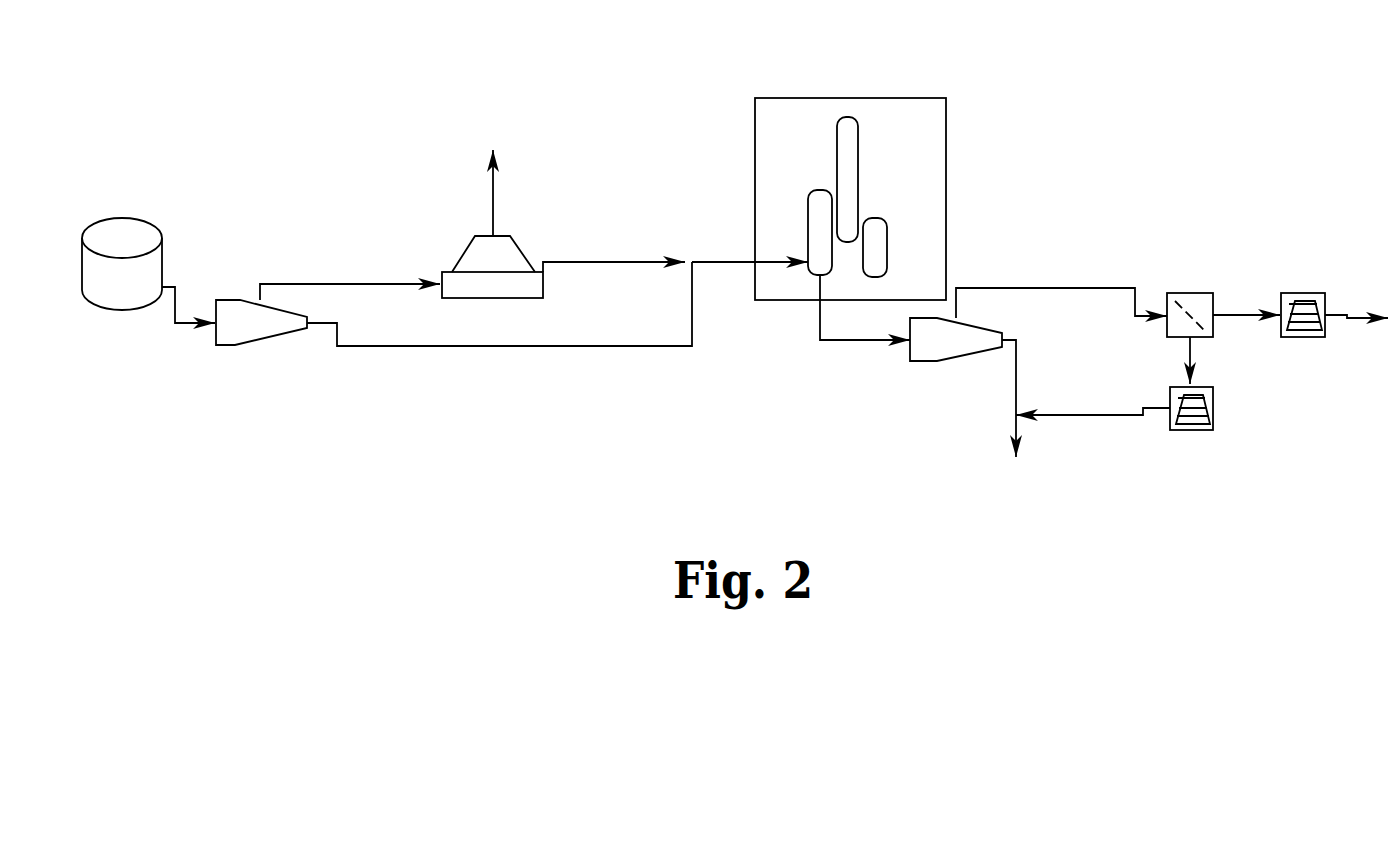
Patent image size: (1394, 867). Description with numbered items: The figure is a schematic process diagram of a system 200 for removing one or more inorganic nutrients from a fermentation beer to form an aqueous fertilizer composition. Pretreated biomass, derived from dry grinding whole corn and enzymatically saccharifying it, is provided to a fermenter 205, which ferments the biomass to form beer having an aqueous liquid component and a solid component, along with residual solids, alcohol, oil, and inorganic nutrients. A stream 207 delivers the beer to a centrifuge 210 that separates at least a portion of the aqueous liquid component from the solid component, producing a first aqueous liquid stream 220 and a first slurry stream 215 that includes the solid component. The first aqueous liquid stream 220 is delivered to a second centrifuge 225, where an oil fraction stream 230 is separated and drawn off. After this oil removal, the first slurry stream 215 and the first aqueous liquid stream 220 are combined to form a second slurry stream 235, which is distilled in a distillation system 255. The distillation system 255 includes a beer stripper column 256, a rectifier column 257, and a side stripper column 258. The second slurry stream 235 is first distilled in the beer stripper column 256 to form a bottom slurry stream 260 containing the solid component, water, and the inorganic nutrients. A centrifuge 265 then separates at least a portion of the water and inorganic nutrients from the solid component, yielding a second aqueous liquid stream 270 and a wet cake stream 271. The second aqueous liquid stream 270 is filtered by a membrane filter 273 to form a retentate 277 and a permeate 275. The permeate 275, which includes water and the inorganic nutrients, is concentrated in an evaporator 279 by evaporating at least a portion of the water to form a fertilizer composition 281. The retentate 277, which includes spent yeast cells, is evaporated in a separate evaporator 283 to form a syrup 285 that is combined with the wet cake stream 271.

The system 200 is at (556, 63).
The fermenter 205 is at (160, 228).
The stream 207 is at (180, 324).
The centrifuge 210 is at (235, 345).
The first slurry stream 215 is at (480, 346).
The first aqueous liquid stream 220 is at (345, 283).
The centrifuge 225 is at (520, 298).
The oil fraction stream 230 is at (493, 200).
The second slurry stream 235 is at (720, 262).
The distillation system 255 is at (946, 135).
The beer stripper column 256 is at (815, 190).
The rectifier column 257 is at (858, 148).
The side stripper column 258 is at (882, 218).
The bottom slurry stream 260 is at (850, 340).
The centrifuge 265 is at (930, 361).
The second aqueous liquid stream 270 is at (1032, 288).
The wet cake stream 271 is at (1016, 378).
The membrane filter 273 is at (1192, 293).
The permeate 275 is at (1237, 315).
The retentate 277 is at (1190, 352).
The evaporator 279 is at (1298, 337).
The fertilizer composition 281 is at (1355, 318).
The evaporator 283 is at (1213, 412).
The syrup 285 is at (1095, 415).